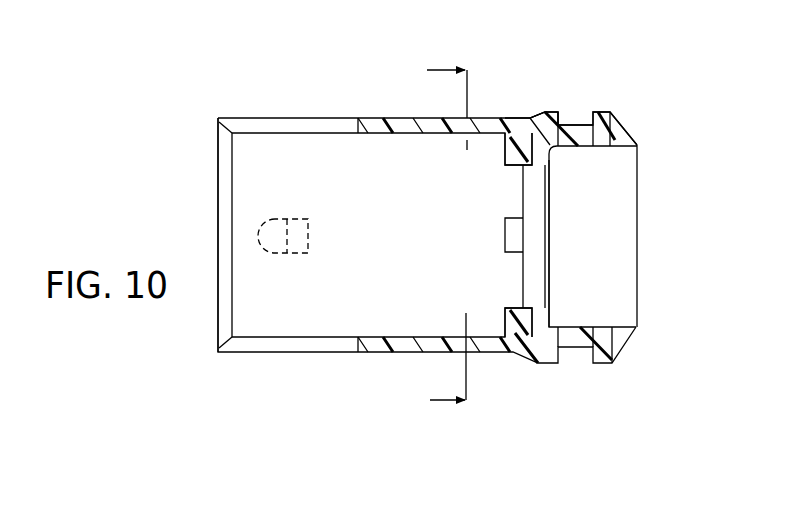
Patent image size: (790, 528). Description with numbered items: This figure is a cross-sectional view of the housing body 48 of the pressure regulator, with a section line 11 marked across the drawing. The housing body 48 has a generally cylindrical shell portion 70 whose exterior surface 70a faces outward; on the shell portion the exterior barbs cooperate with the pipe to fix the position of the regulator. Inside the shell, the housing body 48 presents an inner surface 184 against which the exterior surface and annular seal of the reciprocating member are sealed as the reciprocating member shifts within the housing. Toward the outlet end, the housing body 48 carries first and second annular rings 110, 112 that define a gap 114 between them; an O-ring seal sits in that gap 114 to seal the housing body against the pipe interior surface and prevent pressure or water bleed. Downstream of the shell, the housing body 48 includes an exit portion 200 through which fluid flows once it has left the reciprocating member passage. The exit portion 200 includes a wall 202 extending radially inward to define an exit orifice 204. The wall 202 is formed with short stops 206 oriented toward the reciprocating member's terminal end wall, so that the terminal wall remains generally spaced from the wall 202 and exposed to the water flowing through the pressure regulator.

The housing body 48 is at (520, 72).
The gap 114 is at (590, 97).
The second annular ring 112 is at (545, 112).
The first annular ring 110 is at (607, 112).
The exterior surface 70a is at (377, 118).
The section line 11- 11 is at (435, 235).
The inner surface 184 is at (283, 140).
The short stops 206 is at (508, 150).
The wall 202 is at (548, 175).
The exit orifice 204 is at (550, 230).
The exit portion 200 is at (652, 254).
The cylindrical shell portion 70 is at (367, 354).